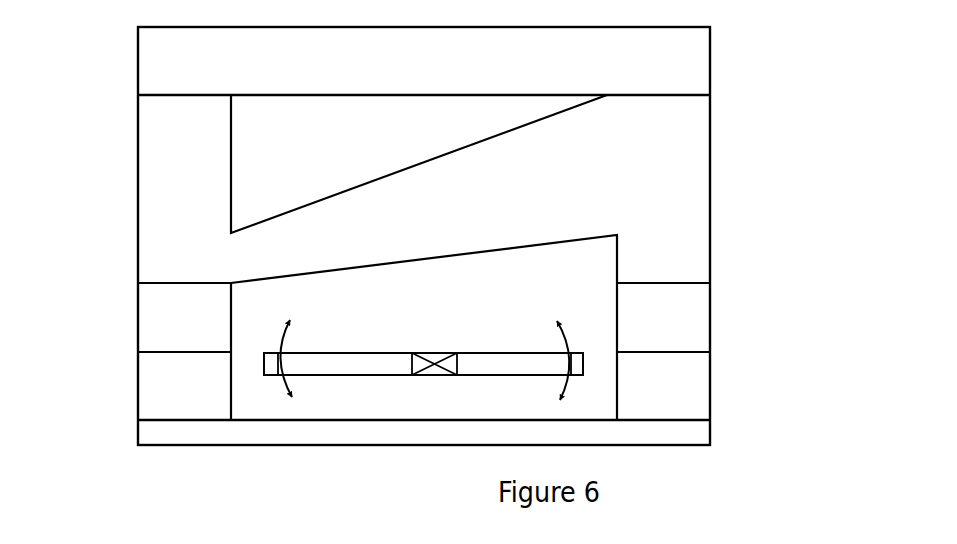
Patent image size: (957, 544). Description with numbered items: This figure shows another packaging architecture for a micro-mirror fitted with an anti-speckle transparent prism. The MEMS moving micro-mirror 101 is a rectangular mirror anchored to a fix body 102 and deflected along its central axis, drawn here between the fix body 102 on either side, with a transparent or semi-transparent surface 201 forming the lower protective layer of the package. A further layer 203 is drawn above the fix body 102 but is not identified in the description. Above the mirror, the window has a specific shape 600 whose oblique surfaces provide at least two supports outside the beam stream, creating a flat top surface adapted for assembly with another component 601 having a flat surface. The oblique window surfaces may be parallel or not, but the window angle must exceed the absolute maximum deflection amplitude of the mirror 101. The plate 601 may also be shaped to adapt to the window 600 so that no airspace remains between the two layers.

The window 600 is at (695, 178).
The plate 601 is at (695, 60).
The upper spacer layer 203 is at (155, 320).
The fix body 102 is at (155, 377).
The transparent or semi-transparent surface 201 is at (155, 434).
The MEMS moving micro-mirror 101 is at (323, 365).